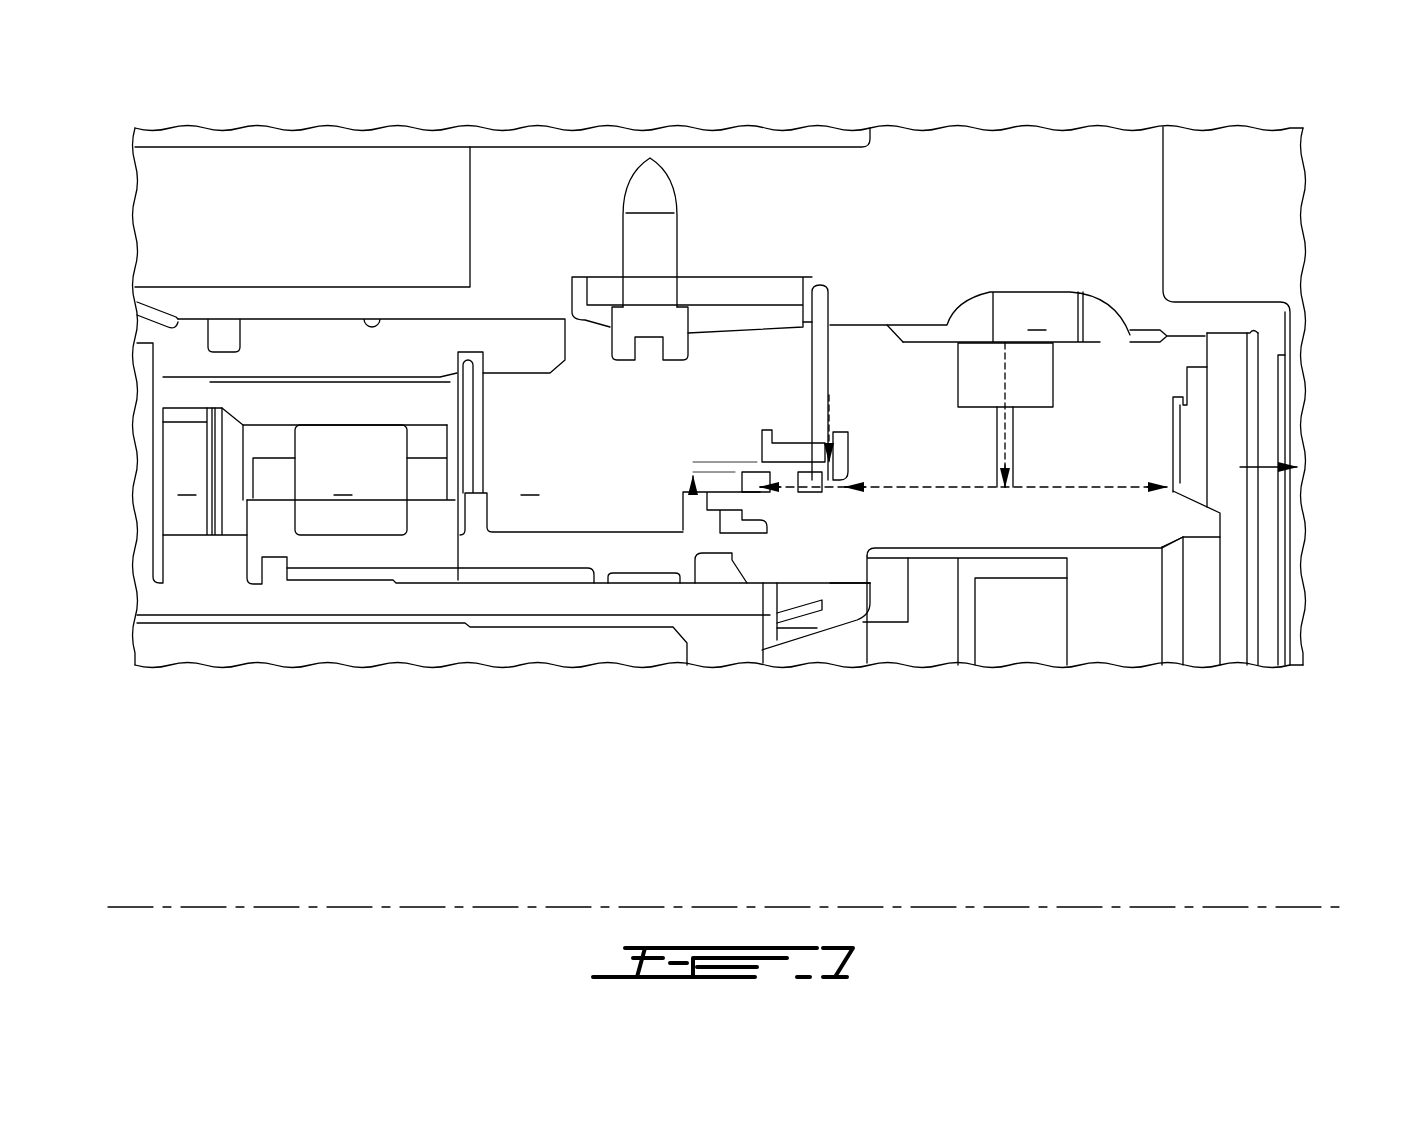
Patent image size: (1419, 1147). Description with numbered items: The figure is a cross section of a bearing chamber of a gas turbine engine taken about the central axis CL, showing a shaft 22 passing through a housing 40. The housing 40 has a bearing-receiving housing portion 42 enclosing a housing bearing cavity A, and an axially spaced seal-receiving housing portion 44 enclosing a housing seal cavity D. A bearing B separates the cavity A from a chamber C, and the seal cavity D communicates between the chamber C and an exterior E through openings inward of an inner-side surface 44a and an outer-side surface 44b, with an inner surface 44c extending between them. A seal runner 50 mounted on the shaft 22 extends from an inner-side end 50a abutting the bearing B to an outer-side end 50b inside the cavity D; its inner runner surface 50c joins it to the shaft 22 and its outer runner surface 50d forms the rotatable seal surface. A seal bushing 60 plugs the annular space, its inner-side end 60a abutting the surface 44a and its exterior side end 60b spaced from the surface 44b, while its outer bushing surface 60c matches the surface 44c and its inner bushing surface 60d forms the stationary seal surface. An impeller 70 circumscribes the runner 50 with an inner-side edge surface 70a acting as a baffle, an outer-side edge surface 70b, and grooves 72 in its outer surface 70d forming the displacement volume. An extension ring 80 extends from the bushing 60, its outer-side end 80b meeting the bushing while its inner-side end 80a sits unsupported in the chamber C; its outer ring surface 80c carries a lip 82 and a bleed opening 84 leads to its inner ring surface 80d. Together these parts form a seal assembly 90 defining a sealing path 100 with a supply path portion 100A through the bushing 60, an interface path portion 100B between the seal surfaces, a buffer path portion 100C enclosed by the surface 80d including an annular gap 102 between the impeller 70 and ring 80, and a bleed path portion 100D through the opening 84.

The shaft 22 is at (347, 605).
The housing 40 is at (453, 180).
The bearing-receiving housing portion 42 is at (207, 263).
The seal-receiving housing portion 44 is at (1215, 262).
The inner-side surface 44a is at (830, 330).
The outer-side surface 44b is at (1253, 320).
The inner surface 44c is at (920, 335).
The seal runner 50 is at (1238, 522).
The inner-side end 50a is at (453, 557).
The outer-side end 50b is at (1220, 527).
The inner runner surface 50c is at (733, 485).
The outer runner surface 50d is at (960, 490).
The seal bushing 60 is at (1233, 435).
The inner-side end 60a is at (830, 355).
The exterior side end 60b is at (1217, 350).
The outer bushing surface 60c is at (1187, 333).
The inner bushing surface 60d is at (1058, 496).
The impeller 70 is at (683, 492).
The inner-side edge surface 70a is at (735, 485).
The outer-side edge surface 70b is at (823, 488).
The outer surface 70d is at (728, 483).
The grooves 72 is at (783, 488).
The extension ring 80 is at (770, 400).
The inner-side end 80a is at (760, 445).
The outer-side end 80b is at (847, 487).
The outer ring surface 80c is at (800, 470).
The inner ring surface 80d is at (693, 462).
The lip 82 is at (753, 435).
The bleed opening 84 is at (850, 436).
The seal assembly 90 is at (1290, 393).
The sealing path 100 is at (1005, 342).
The supply path portion 100A is at (1007, 407).
The interface path portion 100B is at (937, 490).
The buffer path portion 100C is at (800, 488).
The bleed path portion 100D is at (838, 423).
The annular gap 102 is at (690, 466).
The housing bearing cavity A is at (205, 471).
The bearing B is at (349, 480).
The chamber C is at (570, 466).
The housing seal cavity D is at (1037, 313).
The exterior E is at (1259, 467).
The central axis CL is at (800, 905).